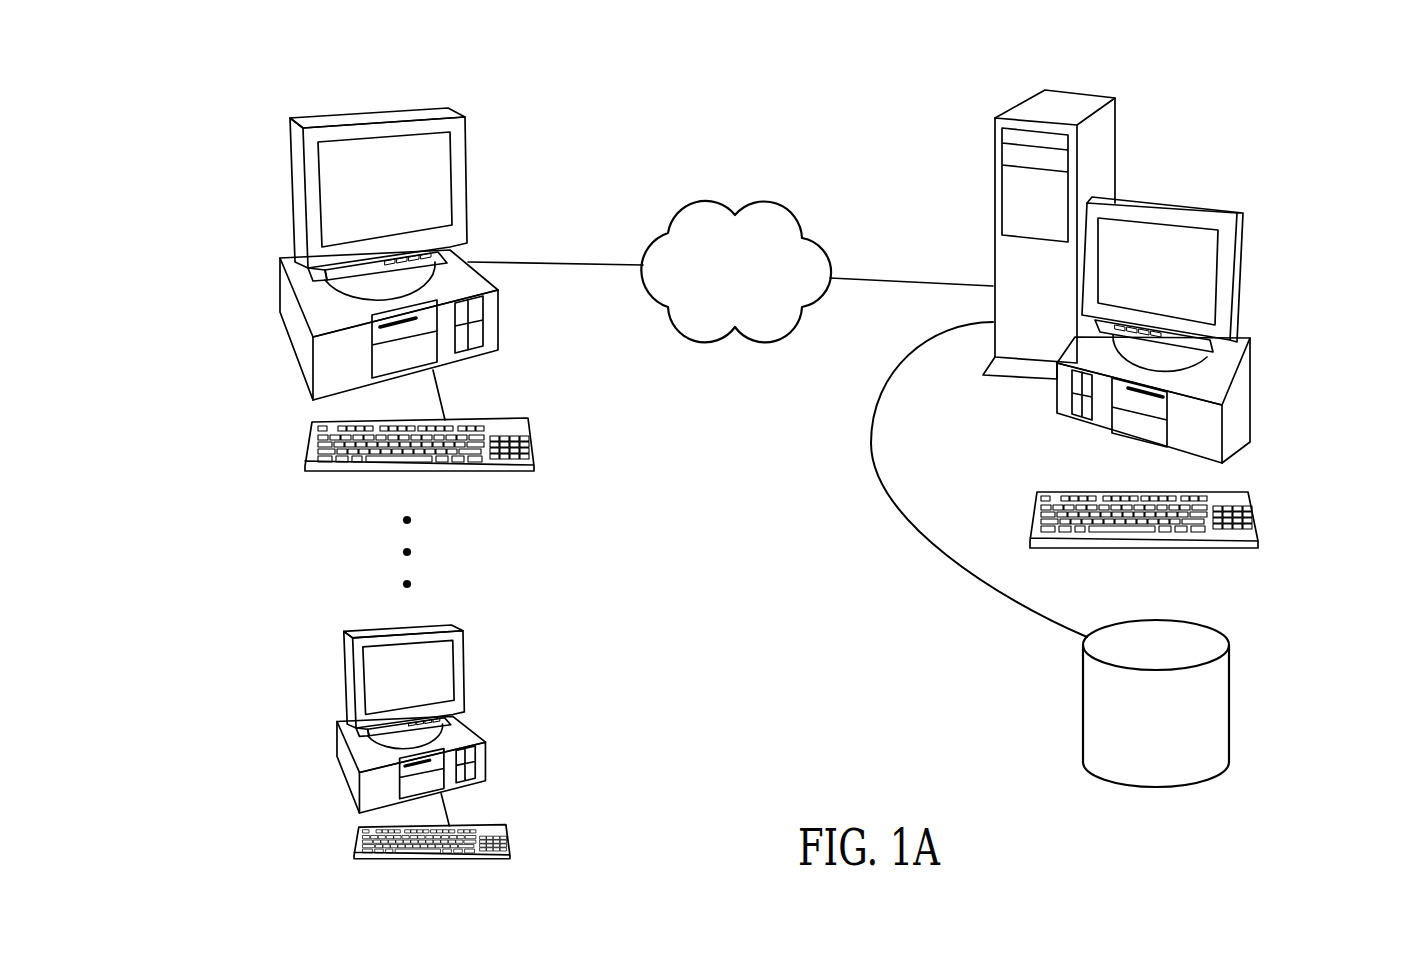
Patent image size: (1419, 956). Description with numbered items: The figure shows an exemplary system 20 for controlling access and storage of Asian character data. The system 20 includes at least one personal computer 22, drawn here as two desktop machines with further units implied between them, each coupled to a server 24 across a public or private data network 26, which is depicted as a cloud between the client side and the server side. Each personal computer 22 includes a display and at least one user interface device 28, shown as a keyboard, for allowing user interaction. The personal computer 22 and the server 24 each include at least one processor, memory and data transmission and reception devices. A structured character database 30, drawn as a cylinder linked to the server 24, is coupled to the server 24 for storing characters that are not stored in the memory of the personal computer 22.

The system 20 is at (829, 77).
The personal computer 22 is at (255, 294).
The server 24 is at (1304, 266).
The data network 26 is at (812, 187).
The user interface device 28 is at (293, 454).
The structured character database 30 is at (1282, 698).